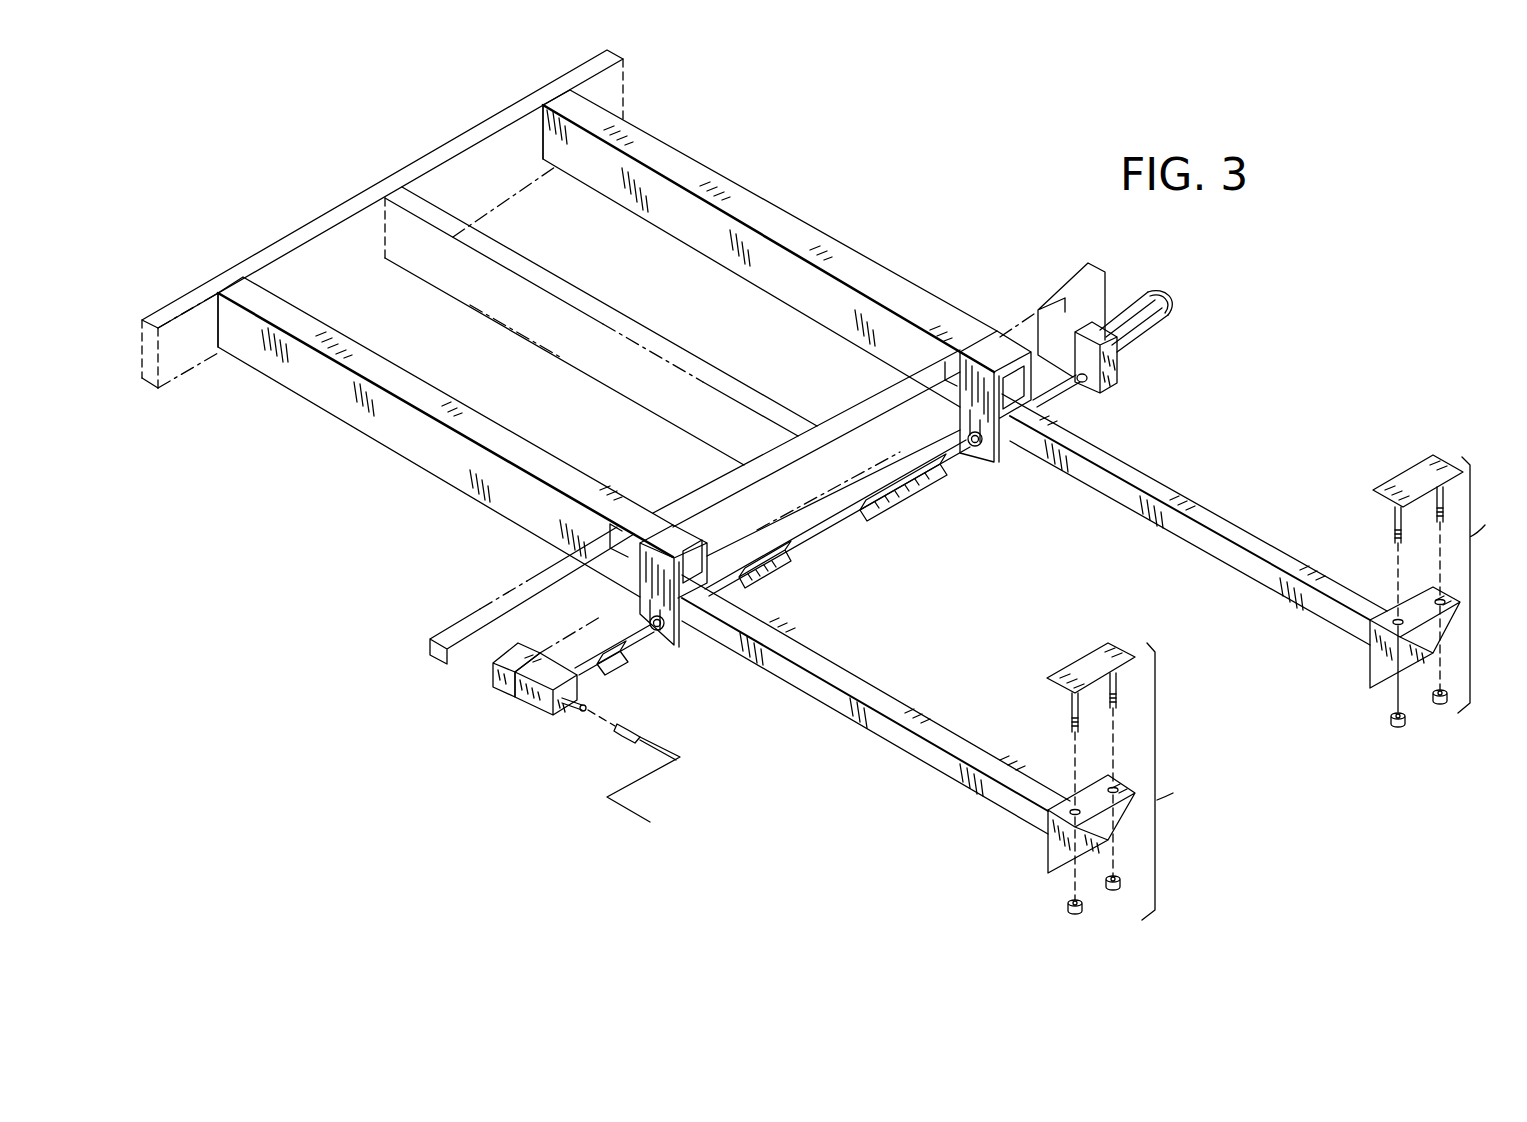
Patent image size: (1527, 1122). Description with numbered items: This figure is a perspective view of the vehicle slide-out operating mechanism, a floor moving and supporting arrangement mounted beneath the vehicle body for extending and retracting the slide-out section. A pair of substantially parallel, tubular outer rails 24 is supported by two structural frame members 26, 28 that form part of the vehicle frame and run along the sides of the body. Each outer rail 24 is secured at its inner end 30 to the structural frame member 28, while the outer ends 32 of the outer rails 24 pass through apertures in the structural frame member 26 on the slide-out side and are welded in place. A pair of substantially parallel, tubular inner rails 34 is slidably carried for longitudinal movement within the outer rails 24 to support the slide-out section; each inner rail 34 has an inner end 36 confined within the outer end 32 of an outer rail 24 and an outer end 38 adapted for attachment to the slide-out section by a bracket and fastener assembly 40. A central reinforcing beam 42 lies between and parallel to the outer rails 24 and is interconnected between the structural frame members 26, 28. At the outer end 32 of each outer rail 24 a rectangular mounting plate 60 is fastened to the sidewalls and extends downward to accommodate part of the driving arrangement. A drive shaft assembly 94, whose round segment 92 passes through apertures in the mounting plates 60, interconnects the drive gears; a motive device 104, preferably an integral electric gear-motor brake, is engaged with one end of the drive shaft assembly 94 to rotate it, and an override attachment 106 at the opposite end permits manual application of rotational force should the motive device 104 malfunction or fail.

The outer rails 24 is at (810, 212).
The structural frame member 26 is at (1083, 276).
The structural frame member 28 is at (603, 100).
The inner end 30 is at (221, 345).
The outer ends 32 is at (1000, 362).
The inner rails 34 is at (1213, 503).
The inner end 36 is at (708, 580).
The outer end 38 is at (1360, 628).
The bracket and fastener assembly 40 is at (1280, 687).
The central reinforcing beam 42 is at (730, 410).
The mounting plate 60 is at (990, 444).
The round segment of drive shaft assembly 92 is at (1086, 380).
The drive shaft assembly 94 is at (889, 503).
The motive device 104 is at (1175, 327).
The override attachment 106 is at (582, 736).